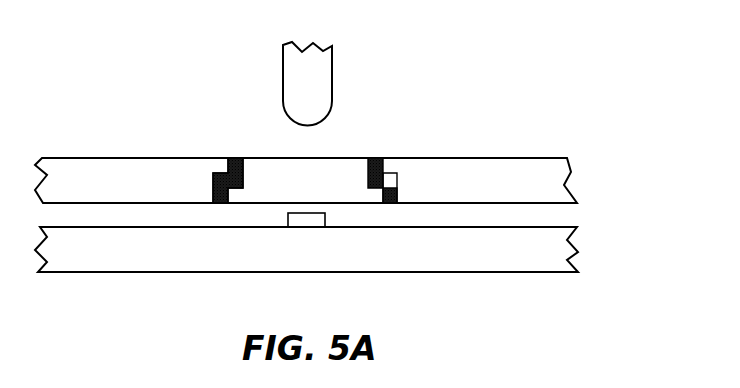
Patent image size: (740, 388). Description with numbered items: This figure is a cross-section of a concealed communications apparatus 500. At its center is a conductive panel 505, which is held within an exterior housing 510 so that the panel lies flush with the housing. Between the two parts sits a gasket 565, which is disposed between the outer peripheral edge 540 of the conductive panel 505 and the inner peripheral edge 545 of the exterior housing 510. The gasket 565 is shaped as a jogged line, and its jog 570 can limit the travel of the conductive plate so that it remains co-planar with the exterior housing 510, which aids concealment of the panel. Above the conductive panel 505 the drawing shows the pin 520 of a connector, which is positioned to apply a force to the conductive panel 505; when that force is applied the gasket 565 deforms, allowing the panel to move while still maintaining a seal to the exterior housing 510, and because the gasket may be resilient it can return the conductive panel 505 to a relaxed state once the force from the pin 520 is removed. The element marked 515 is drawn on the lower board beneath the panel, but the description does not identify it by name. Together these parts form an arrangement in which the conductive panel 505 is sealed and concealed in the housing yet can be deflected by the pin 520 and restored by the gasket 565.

The concealed communications apparatus 500 is at (566, 70).
The conductive panel 505 is at (305, 173).
The exterior housing 510 is at (547, 173).
The lower contact pad 515 is at (308, 218).
The pin 520 is at (320, 80).
The outer peripheral edge 540 is at (258, 160).
The inner peripheral edge 545 is at (213, 160).
The gasket 565 is at (375, 160).
The jog 570 is at (397, 187).